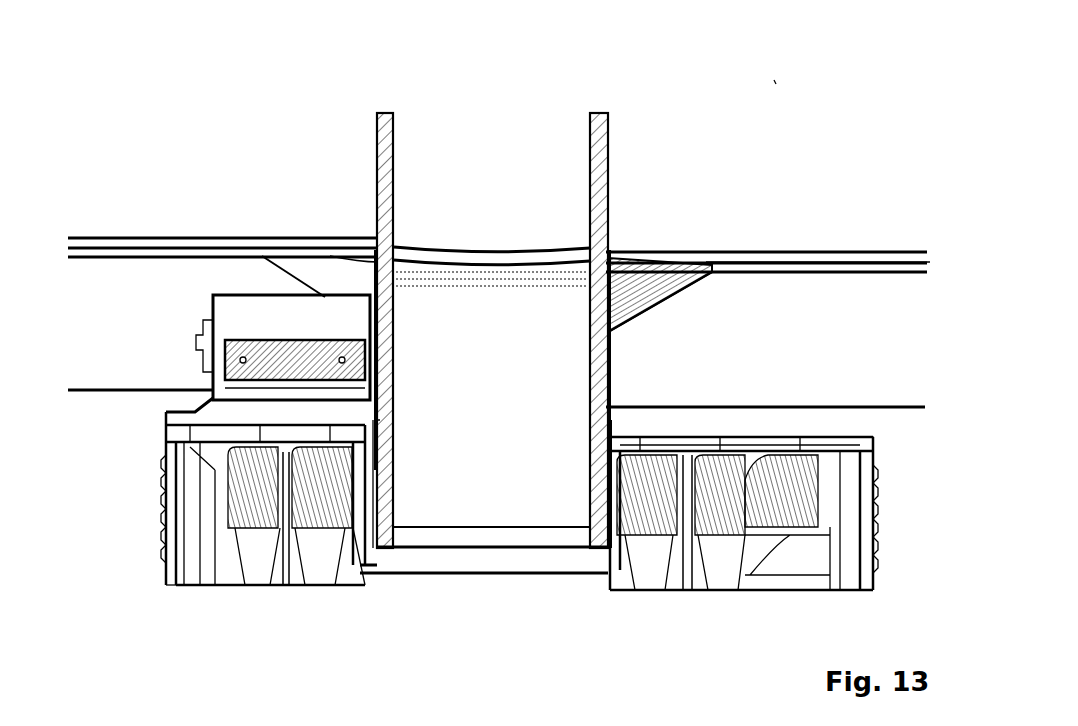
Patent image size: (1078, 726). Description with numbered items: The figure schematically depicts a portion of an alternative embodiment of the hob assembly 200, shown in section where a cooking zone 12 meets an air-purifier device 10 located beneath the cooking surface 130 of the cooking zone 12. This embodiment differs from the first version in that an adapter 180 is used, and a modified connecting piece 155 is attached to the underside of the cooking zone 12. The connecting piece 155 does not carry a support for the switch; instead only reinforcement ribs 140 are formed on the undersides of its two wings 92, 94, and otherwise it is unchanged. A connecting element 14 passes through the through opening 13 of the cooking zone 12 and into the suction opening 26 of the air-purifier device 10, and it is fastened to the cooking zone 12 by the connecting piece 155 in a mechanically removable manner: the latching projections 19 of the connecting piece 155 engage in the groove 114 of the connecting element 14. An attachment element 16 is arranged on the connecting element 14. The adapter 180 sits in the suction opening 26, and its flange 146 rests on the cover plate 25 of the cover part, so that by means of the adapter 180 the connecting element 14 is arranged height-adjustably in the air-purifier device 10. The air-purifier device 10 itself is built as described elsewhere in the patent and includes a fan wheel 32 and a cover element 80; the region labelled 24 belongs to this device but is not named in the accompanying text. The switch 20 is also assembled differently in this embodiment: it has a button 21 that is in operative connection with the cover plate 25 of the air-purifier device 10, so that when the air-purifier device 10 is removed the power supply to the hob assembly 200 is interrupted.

The air-purifier device 10 is at (115, 556).
The cooking zone 12 is at (860, 332).
The through opening 13 is at (492, 205).
The connecting element 14 is at (396, 408).
The attachment element 16 is at (608, 128).
The latching projections 19 is at (583, 402).
The switch 20 is at (238, 312).
The button 21 is at (165, 425).
The cover 24 is at (848, 438).
The cover plate 25 is at (782, 440).
The suction opening 26 is at (450, 588).
The fan wheel 32 is at (345, 583).
The cover element 80 is at (712, 590).
The wing 92 is at (260, 255).
The wing 94 is at (734, 262).
The groove 114 is at (396, 400).
The cooking surface 130 is at (770, 248).
The reinforcement ribs 140 is at (333, 270).
The flange 146 is at (612, 440).
The connecting piece 155 is at (652, 303).
The adapter 180 is at (590, 440).
The hob assembly 200 is at (776, 82).